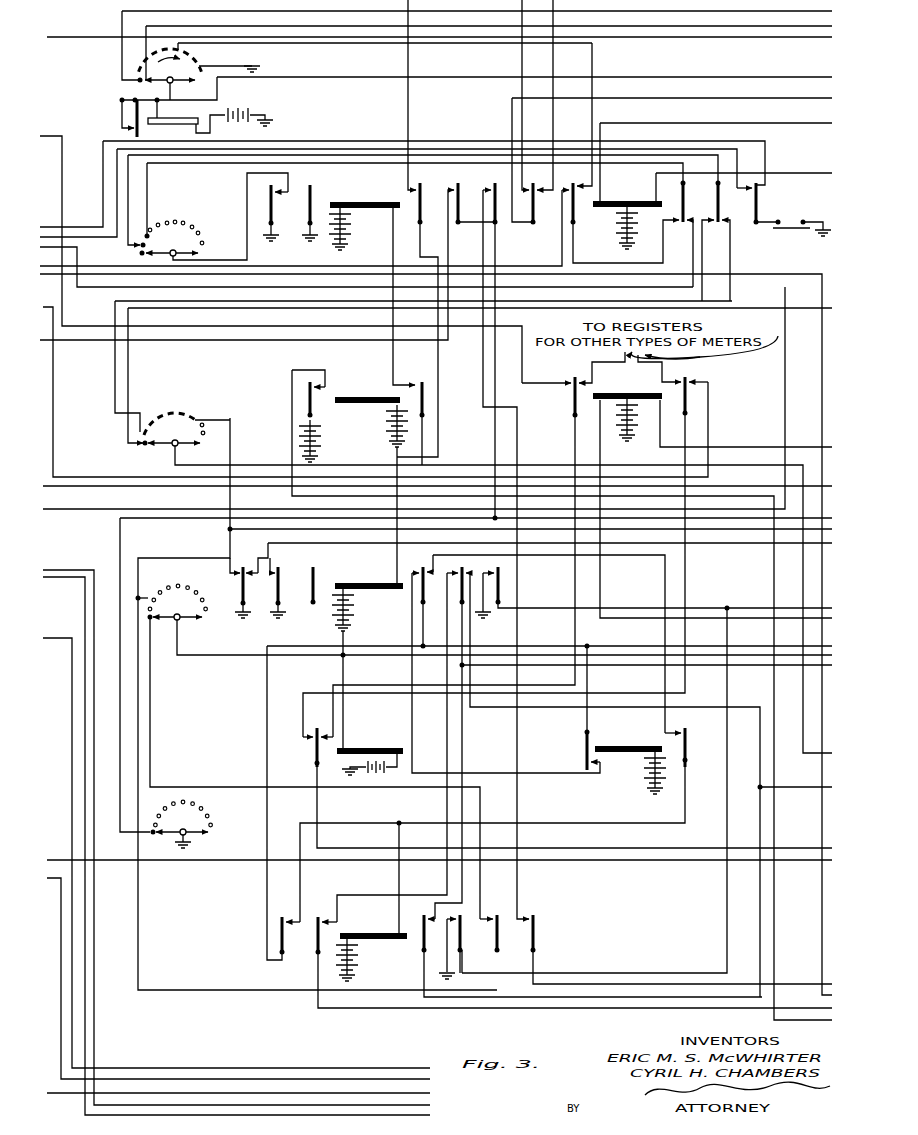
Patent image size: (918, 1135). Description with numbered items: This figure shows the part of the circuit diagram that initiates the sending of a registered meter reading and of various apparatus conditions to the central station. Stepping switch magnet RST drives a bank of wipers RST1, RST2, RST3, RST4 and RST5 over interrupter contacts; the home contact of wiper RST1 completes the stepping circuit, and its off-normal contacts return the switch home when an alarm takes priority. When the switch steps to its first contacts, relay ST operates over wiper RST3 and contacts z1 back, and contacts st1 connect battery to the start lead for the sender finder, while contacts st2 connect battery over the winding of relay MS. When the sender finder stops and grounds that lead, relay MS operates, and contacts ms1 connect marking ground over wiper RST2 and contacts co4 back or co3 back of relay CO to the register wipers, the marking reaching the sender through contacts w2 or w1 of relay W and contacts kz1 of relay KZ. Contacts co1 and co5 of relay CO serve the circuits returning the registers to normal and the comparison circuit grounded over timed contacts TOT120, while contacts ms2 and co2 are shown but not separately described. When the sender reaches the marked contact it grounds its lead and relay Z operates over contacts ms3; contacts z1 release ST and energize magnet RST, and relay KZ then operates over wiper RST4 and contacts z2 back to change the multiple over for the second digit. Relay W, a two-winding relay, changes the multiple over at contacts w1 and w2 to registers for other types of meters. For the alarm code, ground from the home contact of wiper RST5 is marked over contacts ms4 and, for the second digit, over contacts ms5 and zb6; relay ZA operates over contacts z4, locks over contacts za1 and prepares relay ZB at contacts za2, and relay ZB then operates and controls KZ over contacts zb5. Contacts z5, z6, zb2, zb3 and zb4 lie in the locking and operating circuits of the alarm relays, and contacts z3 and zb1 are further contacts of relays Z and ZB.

The wiper RST1 is at (190, 76).
The magnet RST is at (197, 118).
The wiper RST2 is at (208, 207).
The wiper RST3 is at (172, 373).
The wiper RST4 is at (172, 602).
The wiper RST5 is at (182, 824).
The relay MS is at (372, 286).
The contacts ms1 is at (274, 213).
The contacts ms2 is at (313, 213).
The contacts ms3 is at (426, 204).
The contacts ms4 is at (476, 204).
The contacts ms5 is at (501, 352).
The relay CO is at (627, 218).
The contacts co1 is at (538, 204).
The contacts co2 is at (578, 204).
The contacts co3 is at (688, 202).
The contacts co4 is at (723, 202).
The contacts co5 is at (761, 204).
The contacts TO and T120 TOT120 is at (793, 221).
The relay ST is at (371, 415).
The contacts st1 is at (310, 422).
The contacts st2 is at (426, 400).
The relay W is at (627, 410).
The contacts w1 is at (579, 397).
The contacts w2 is at (689, 396).
The relay Z is at (367, 613).
The contacts z1 is at (243, 592).
The contacts z2 is at (278, 592).
The contacts z3 is at (316, 586).
The contacts z4 is at (426, 608).
The contacts z5 is at (465, 617).
The contacts z6 is at (613, 589).
The relay KZ is at (370, 754).
The contacts kz1 is at (322, 747).
The relay ZA is at (630, 763).
The contacts za1 is at (571, 750).
The contacts za2 is at (548, 777).
The relay ZB is at (371, 950).
The contacts zb1 is at (287, 936).
The contacts zb2 is at (323, 936).
The contacts zb3 is at (429, 934).
The contacts zb4 is at (465, 934).
The contacts zb5 is at (502, 934).
The contacts zb6 is at (538, 934).